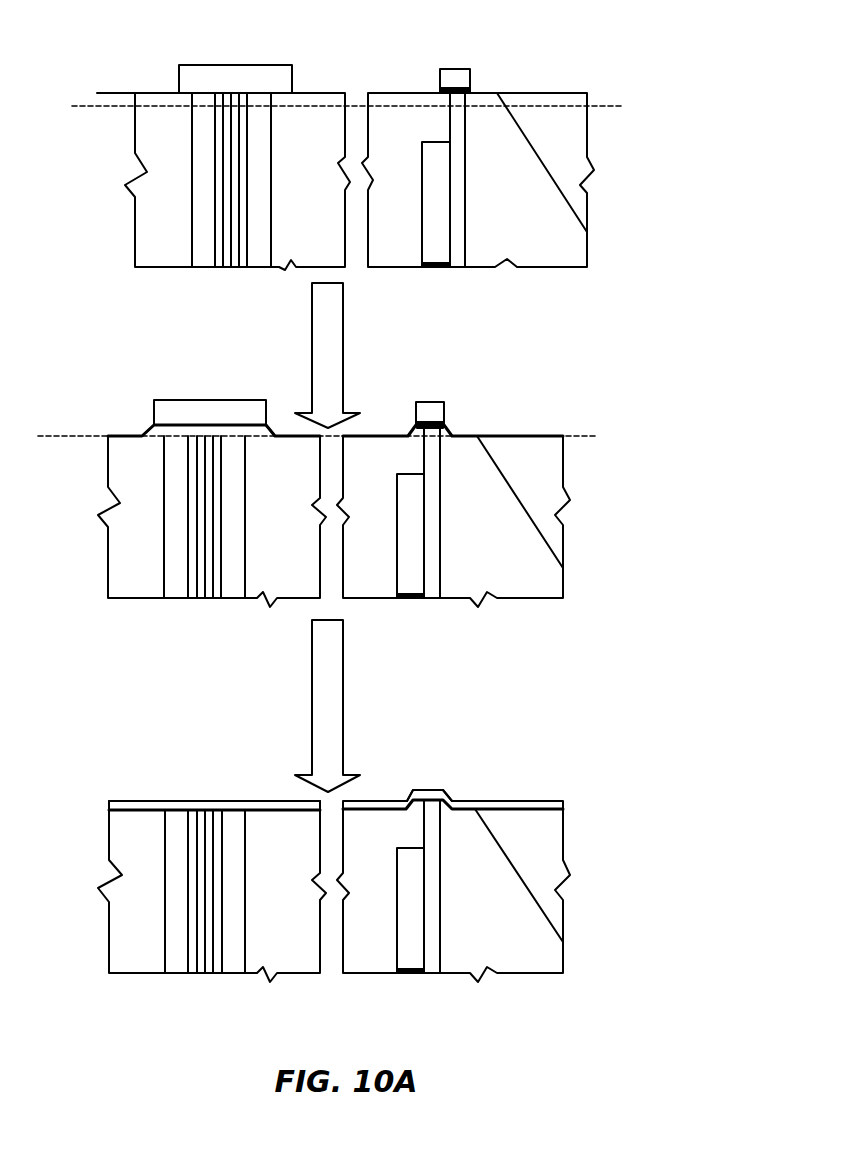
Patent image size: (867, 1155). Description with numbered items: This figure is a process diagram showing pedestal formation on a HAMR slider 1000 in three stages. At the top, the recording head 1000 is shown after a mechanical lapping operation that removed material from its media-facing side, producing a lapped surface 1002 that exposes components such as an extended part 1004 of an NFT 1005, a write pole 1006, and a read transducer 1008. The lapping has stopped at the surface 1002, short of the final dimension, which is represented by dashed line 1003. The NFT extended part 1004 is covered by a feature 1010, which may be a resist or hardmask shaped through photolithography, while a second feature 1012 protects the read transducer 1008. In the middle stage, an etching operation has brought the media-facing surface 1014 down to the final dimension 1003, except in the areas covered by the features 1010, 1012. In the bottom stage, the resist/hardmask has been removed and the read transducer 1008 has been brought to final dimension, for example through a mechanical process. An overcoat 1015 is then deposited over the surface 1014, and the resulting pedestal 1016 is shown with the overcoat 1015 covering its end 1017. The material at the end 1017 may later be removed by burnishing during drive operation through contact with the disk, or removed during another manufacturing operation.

The HAMR slider 1000 is at (645, 123).
The lapped surface 1002 is at (127, 93).
The final dimension 1003 is at (78, 106).
The extended part of NFT 1004 is at (450, 118).
The NFT 1005 is at (465, 275).
The write pole 1006 is at (550, 98).
The read transducer 1008 is at (192, 280).
The feature 1010 is at (457, 72).
The second feature 1012 is at (230, 72).
The media-facing surface 1014 is at (124, 435).
The overcoat 1015 is at (225, 800).
The pedestal 1016 is at (413, 807).
The end 1017 is at (437, 788).